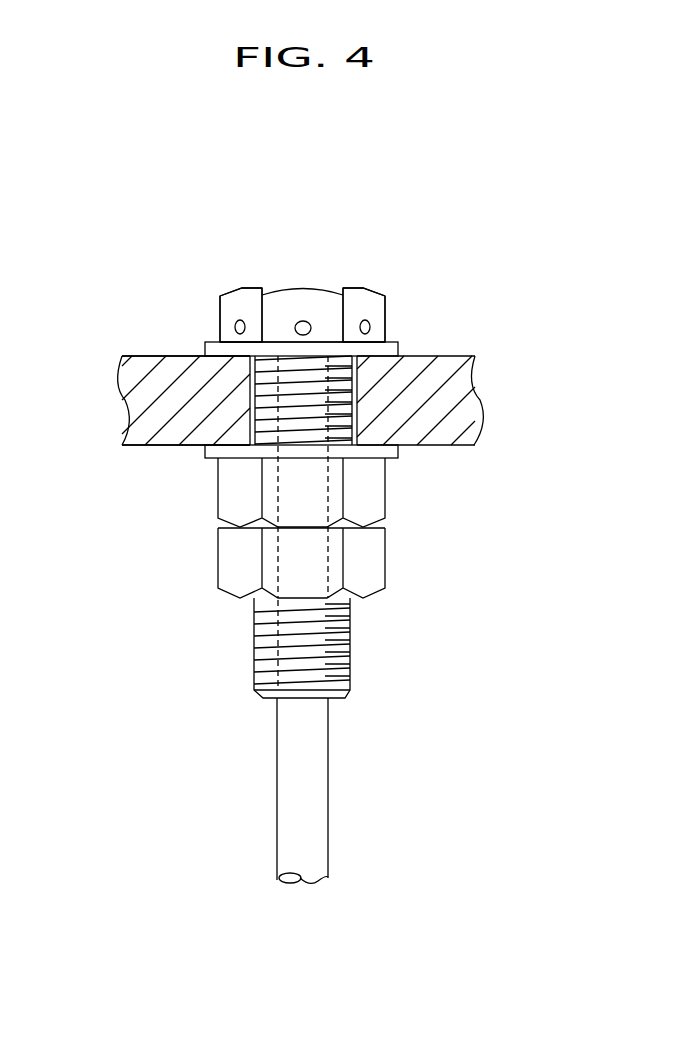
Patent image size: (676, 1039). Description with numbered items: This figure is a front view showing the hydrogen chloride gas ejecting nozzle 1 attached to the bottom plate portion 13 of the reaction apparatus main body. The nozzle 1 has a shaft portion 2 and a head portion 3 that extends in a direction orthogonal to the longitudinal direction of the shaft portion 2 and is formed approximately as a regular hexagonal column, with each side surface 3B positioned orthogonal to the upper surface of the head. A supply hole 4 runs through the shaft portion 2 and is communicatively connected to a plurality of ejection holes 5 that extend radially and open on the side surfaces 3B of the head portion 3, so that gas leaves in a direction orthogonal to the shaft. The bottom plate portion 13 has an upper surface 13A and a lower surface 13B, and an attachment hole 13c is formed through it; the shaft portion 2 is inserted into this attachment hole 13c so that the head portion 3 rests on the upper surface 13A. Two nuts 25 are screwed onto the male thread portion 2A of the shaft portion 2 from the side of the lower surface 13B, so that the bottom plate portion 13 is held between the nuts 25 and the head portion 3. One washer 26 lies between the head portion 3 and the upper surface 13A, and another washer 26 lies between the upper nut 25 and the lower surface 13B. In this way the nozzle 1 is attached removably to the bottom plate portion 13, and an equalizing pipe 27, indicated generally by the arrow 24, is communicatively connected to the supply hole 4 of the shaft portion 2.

The hydrogen chloride gas ejecting nozzle 1 is at (375, 238).
The shaft portion 2 is at (362, 606).
The male thread portion 2A is at (255, 612).
The head portion 3 is at (287, 287).
The side surface of the head portion 3B is at (238, 297).
The supply hole 4 is at (278, 508).
The ejection holes 5 is at (235, 327).
The bottom plate portion 13 is at (430, 357).
The upper surface of the bottom plate portion 13A is at (135, 356).
The lower surface of the bottom plate portion 13B is at (162, 447).
The attachment hole 13c is at (345, 386).
The cable 24 is at (395, 730).
The nuts 25 is at (372, 488).
The washer 26 is at (207, 348).
The equalizing pipe 27 is at (329, 813).